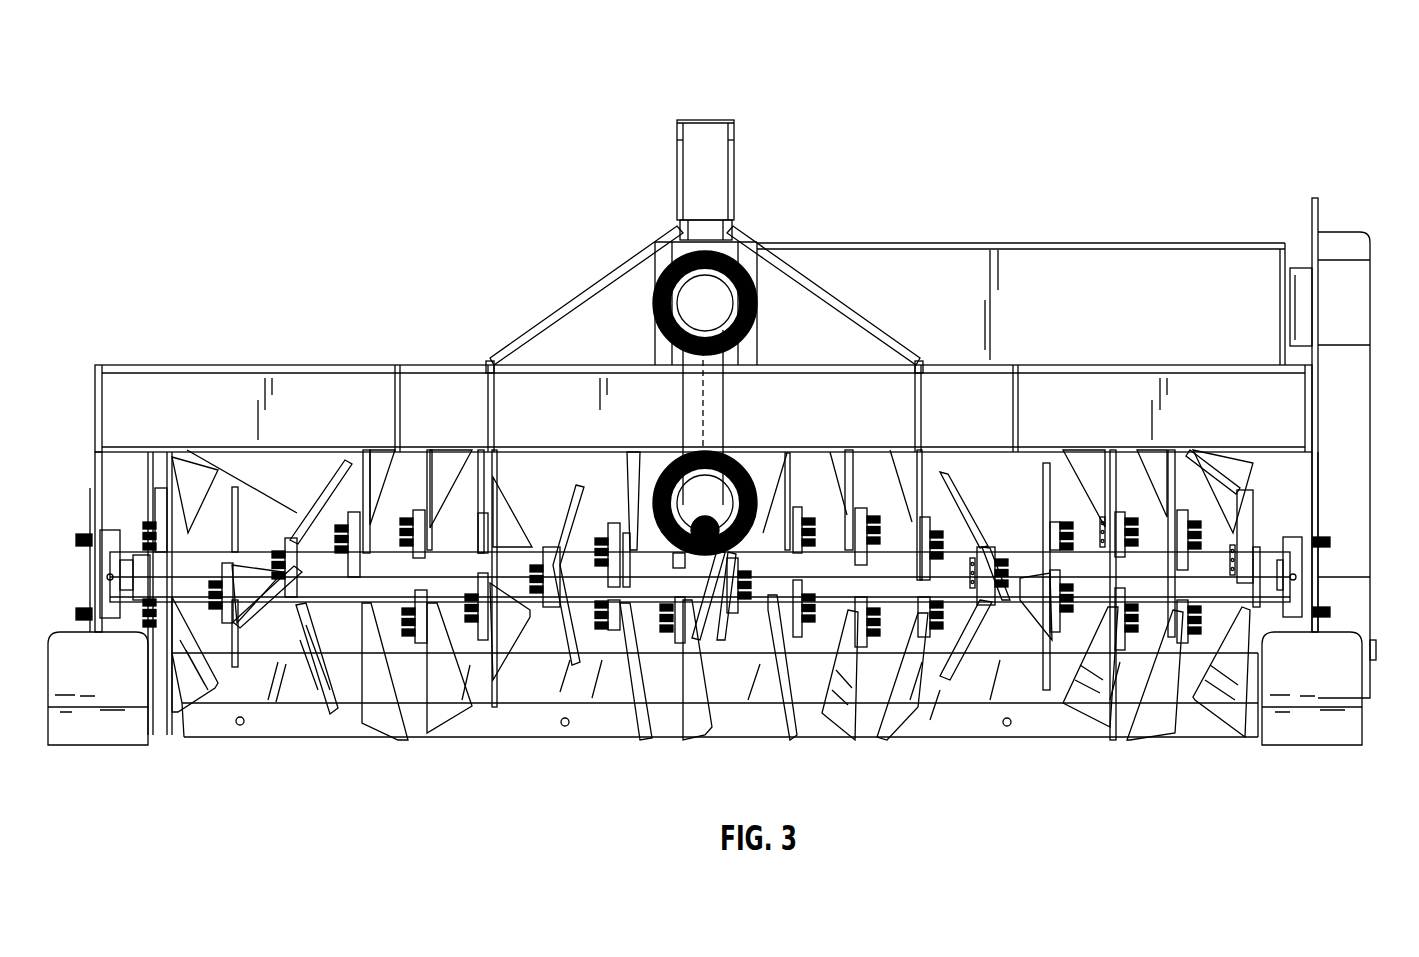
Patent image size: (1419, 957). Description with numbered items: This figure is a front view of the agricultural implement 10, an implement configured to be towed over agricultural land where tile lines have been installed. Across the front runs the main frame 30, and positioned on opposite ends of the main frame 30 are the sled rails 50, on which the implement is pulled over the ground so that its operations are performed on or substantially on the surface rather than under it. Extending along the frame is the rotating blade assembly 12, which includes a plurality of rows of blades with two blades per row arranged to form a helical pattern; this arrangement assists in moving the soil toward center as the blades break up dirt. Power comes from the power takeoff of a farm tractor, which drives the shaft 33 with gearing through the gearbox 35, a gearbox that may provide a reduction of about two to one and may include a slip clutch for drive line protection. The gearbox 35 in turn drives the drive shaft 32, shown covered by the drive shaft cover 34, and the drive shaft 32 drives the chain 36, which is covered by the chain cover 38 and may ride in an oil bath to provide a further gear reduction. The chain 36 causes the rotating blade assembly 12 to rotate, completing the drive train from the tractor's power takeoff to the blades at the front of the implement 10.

The agricultural implement 10 is at (198, 111).
The rotating blade assembly 12 is at (763, 602).
The main frame 30 is at (236, 364).
The drive shaft 32 is at (1190, 294).
The shaft 33 is at (660, 368).
The drive shaft cover 34 is at (1043, 243).
The gearbox 35 is at (730, 228).
The chain 36 is at (1355, 520).
The chain cover 38 is at (1370, 404).
The sled rails 50 is at (62, 748).